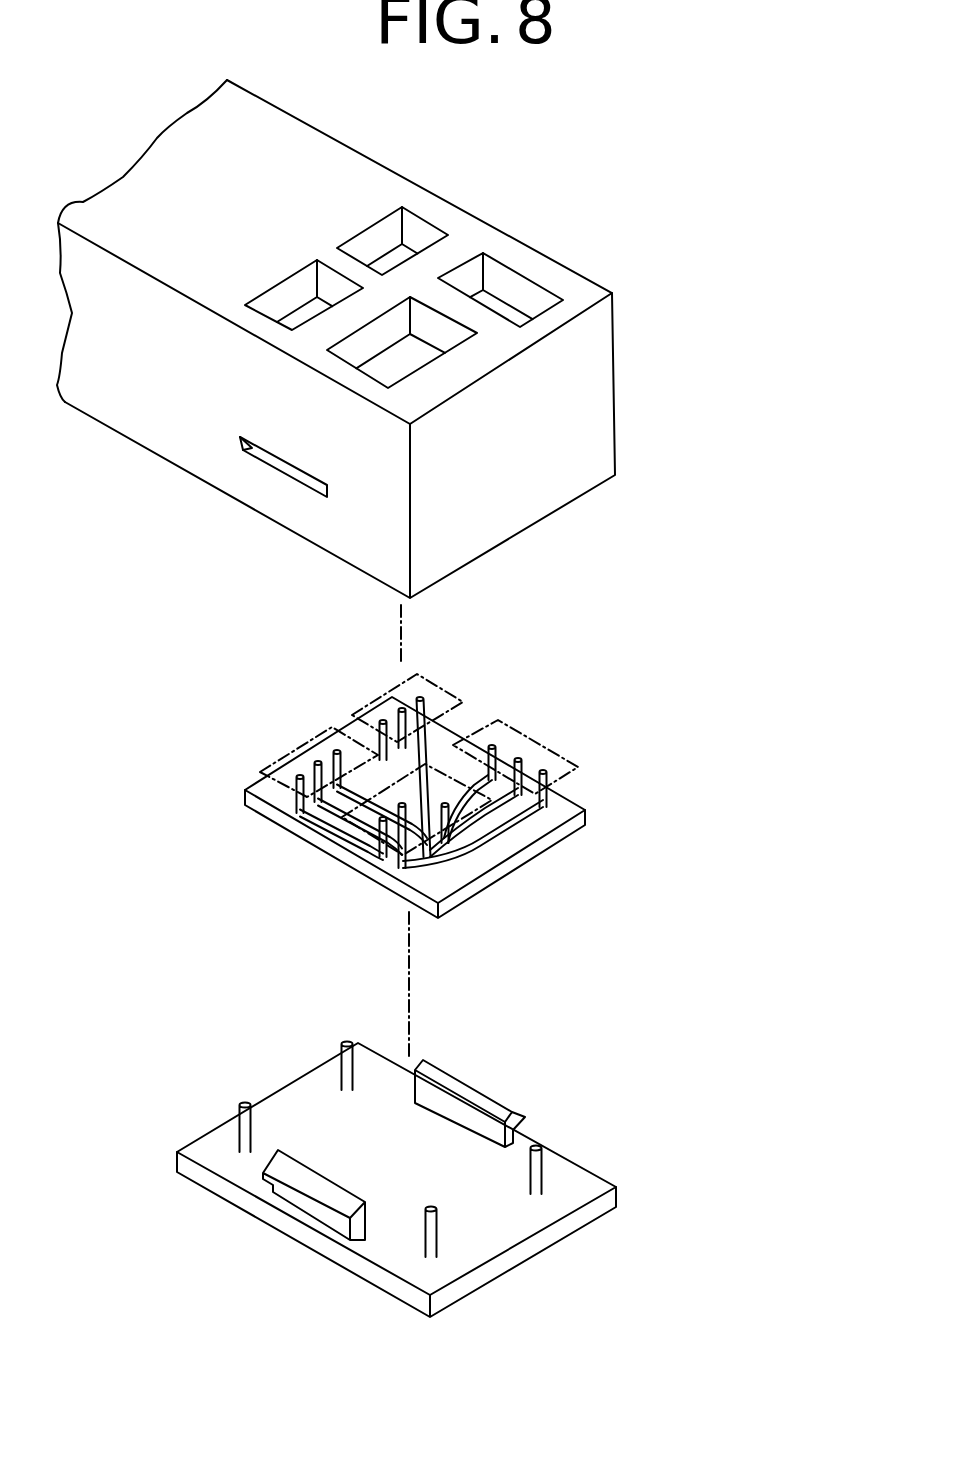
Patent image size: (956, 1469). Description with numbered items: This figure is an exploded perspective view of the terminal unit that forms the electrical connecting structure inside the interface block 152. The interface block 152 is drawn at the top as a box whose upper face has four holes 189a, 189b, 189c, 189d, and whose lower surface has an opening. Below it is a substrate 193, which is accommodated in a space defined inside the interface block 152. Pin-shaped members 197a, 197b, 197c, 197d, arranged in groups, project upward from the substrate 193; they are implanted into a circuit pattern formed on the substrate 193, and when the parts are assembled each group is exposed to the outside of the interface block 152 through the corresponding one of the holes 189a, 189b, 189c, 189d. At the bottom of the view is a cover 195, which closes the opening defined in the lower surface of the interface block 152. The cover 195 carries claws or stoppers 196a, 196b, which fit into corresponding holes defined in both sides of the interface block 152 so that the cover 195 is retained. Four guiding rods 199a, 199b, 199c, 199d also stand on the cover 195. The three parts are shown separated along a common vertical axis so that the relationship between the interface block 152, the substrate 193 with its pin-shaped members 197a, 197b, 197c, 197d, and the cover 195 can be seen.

The interface block 152 is at (131, 452).
The hole 189a is at (293, 288).
The hole 189b is at (420, 232).
The hole 189c is at (420, 352).
The hole 189d is at (527, 290).
The substrate 193 is at (568, 827).
The pin-shaped members 197a is at (323, 760).
The pin-shaped members 197b is at (427, 695).
The pin-shaped members 197c is at (397, 850).
The pin-shaped members 197d is at (523, 728).
The cover 195 is at (556, 1142).
The claw or stopper 196a is at (300, 1178).
The claw or stopper 196b is at (482, 1088).
The guiding rod 199a is at (245, 1103).
The guiding rod 199b is at (347, 1042).
The guiding rod 199c is at (425, 1232).
The guiding rod 199d is at (543, 1162).